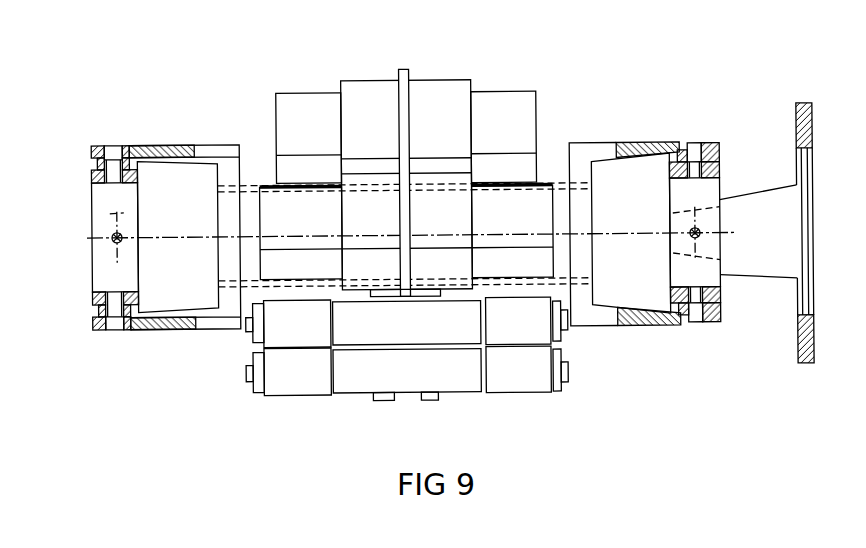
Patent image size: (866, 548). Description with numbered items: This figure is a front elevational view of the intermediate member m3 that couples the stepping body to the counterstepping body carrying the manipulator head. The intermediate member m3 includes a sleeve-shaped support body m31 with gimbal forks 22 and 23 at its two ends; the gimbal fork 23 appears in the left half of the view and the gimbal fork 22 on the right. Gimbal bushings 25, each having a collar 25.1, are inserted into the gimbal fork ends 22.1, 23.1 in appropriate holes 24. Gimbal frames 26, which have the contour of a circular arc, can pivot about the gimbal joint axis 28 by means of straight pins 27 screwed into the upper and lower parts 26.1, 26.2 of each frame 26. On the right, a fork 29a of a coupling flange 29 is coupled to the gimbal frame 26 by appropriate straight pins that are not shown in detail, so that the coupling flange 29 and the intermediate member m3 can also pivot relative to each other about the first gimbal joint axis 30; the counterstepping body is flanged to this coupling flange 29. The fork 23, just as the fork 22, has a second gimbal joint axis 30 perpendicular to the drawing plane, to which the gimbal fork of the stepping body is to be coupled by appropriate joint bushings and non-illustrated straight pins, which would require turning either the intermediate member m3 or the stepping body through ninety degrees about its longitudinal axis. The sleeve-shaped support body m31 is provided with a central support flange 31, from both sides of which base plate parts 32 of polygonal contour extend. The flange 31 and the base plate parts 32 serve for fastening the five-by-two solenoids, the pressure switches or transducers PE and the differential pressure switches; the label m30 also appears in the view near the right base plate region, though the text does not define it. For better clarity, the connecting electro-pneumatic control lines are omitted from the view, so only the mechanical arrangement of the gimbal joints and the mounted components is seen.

The gimbal fork 22 is at (600, 322).
The gimbal fork end 22.1 is at (643, 157).
The gimbal fork 23 is at (182, 327).
The gimbal fork end 23.1 is at (142, 161).
The hole 24 is at (680, 147).
The gimbal bushing 25 is at (710, 163).
The collar 25.1 is at (712, 308).
The gimbal frame 26 is at (132, 228).
The upper part of gimbal frame 26.1 is at (718, 183).
The lower part of gimbal frame 26.2 is at (712, 292).
The straight pin 27 is at (117, 146).
The gimbal joint axis 28 is at (117, 214).
The coupling flange 29 is at (807, 131).
The fork 29a is at (773, 219).
The gimbal joint axis 30 is at (120, 243).
The central support flange 31 is at (410, 73).
The base plate part 32 is at (365, 100).
The pressure switch or transducer PE is at (277, 212).
The mass m30 is at (507, 237).
The support body m31 is at (558, 191).
The intermediate member m3 is at (537, 451).